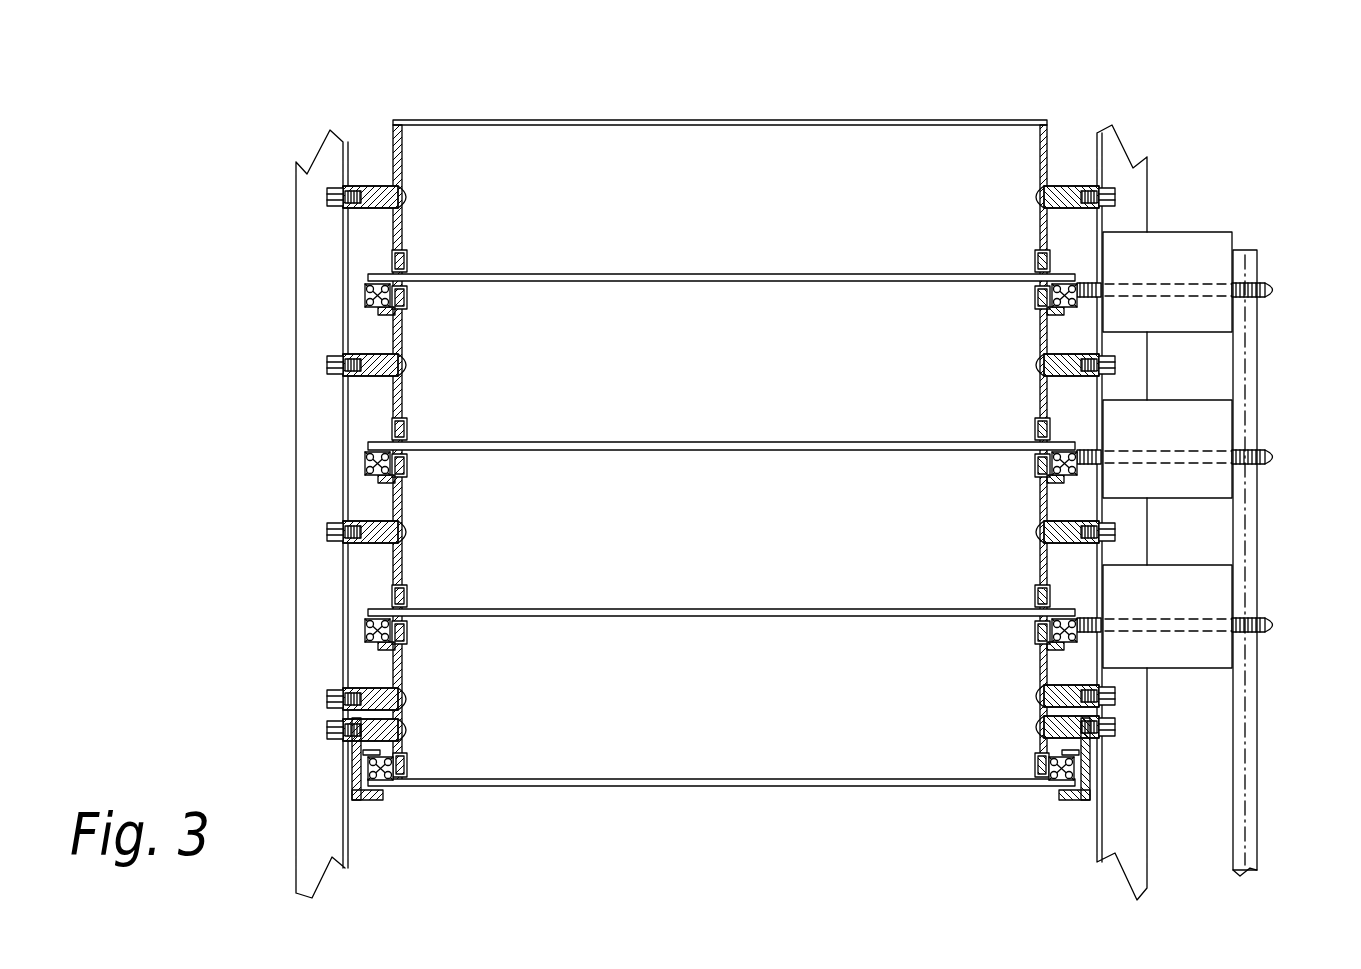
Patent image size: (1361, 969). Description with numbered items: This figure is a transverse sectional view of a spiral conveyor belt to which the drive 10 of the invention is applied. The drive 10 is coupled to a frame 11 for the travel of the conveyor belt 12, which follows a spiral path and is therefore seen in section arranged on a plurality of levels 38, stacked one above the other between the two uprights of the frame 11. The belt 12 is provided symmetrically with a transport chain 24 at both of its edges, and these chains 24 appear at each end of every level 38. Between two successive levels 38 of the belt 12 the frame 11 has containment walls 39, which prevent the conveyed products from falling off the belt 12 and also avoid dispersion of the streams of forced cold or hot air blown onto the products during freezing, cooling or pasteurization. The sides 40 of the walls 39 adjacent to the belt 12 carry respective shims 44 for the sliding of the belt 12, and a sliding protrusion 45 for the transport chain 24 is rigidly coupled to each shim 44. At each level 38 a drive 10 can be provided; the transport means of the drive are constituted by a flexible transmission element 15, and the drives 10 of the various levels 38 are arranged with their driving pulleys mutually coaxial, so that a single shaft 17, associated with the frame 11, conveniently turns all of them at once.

The drive 10 is at (1182, 351).
The frame 11 is at (307, 345).
The conveyor belt 12 is at (622, 442).
The flexible transmission element 15 is at (1268, 273).
The shaft 17 is at (1253, 682).
The transport chain 24 is at (372, 295).
The level 38 is at (358, 422).
The containment wall 39 is at (422, 290).
The side 40 is at (392, 268).
The shim 44 is at (392, 600).
The sliding protrusion 45 is at (386, 478).